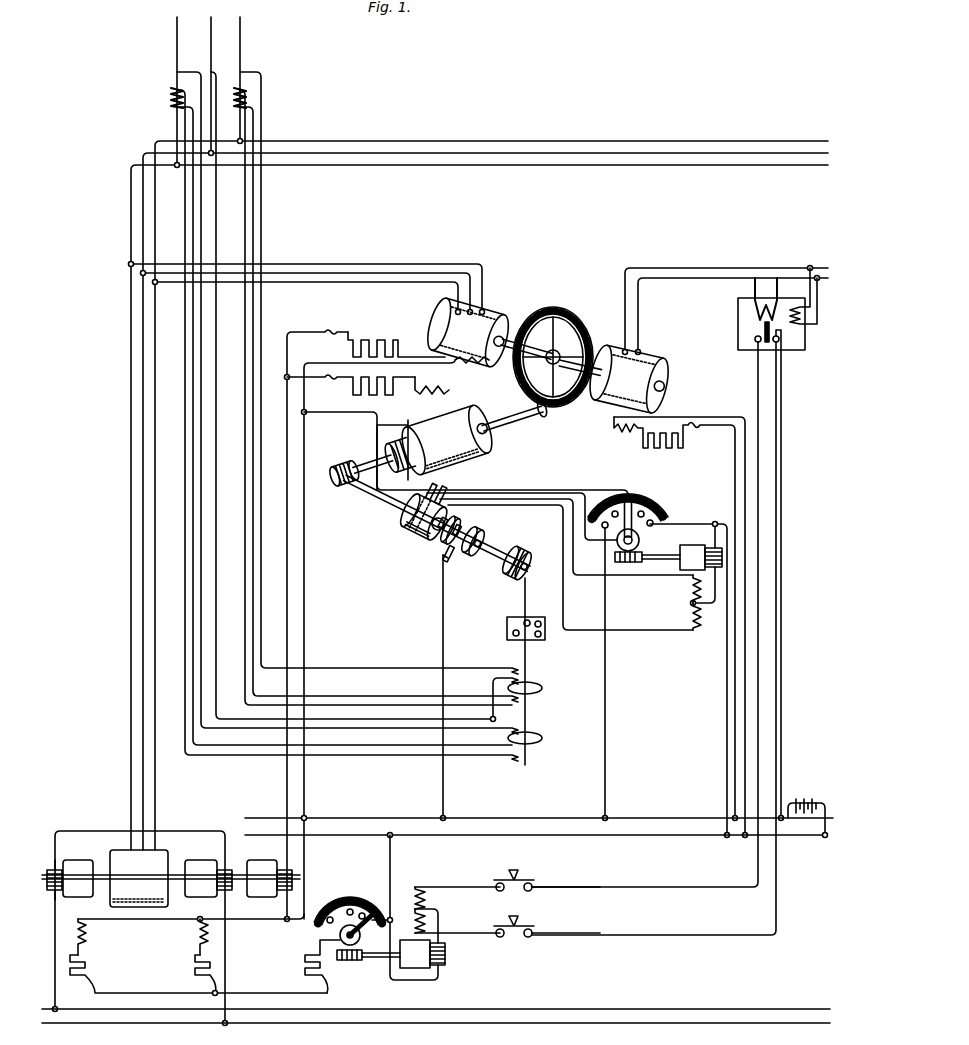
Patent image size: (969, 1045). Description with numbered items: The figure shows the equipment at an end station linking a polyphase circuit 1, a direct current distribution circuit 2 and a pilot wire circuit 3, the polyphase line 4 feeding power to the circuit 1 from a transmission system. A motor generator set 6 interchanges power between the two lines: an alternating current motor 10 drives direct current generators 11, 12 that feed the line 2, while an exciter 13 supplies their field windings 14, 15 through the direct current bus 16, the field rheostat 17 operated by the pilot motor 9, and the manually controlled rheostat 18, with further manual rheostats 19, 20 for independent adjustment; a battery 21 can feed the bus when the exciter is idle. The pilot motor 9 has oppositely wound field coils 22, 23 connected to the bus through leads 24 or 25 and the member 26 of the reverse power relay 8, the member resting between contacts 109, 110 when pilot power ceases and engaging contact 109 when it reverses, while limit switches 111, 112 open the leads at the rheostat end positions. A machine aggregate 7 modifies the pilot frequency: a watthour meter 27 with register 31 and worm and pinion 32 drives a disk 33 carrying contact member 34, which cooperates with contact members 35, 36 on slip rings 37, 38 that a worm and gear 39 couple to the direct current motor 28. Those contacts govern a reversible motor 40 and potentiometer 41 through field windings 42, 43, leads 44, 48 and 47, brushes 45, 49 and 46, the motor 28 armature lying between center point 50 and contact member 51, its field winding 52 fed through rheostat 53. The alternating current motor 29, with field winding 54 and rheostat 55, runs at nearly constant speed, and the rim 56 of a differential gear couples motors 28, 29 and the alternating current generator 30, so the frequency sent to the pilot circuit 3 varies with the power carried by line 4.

The polyphase circuit 1 is at (452, 165).
The direct current distribution circuit 2 is at (446, 1023).
The pilot wire circuit 3 is at (690, 268).
The polyphase line 4 is at (170, 37).
The motor generator set 6 is at (140, 913).
The machine aggregate 7 is at (553, 342).
The reverse power relay 8 is at (738, 310).
The pilot motor 9 is at (391, 907).
The alternating current motor 10 is at (139, 878).
The direct current generator 11 is at (70, 880).
The direct current generator 12 is at (208, 878).
The exciter 13 is at (269, 878).
The field winding 14 is at (86, 936).
The field winding 15 is at (193, 936).
The direct current bus 16 is at (343, 835).
The field rheostat 17 is at (352, 893).
The manually controlled rheostat 18 is at (305, 964).
The manually controlled rheostat 19 is at (88, 960).
The manually controlled rheostat 20 is at (192, 961).
The battery 21 is at (802, 803).
The field coil 22 is at (428, 897).
The field coil 23 is at (432, 920).
The lead 24 is at (614, 887).
The lead 25 is at (620, 935).
The movable member 26 is at (765, 330).
The watthour meter 27 is at (530, 671).
The direct current motor 28 is at (450, 439).
The alternating current motor 29 is at (445, 342).
The alternating current generator 30 is at (620, 416).
The register 31 is at (507, 628).
The worm and pinion 32 is at (515, 582).
The disk 33 is at (476, 560).
The contact member 34 is at (445, 550).
The contact member 35 is at (425, 545).
The contact member 36 is at (455, 533).
The slip ring 37 is at (396, 529).
The slip ring 38 is at (406, 540).
The worm and gear 39 is at (338, 492).
The reversible motor 40 is at (668, 564).
The potentiometer 41 is at (662, 506).
The field winding 42 is at (686, 587).
The field winding 43 is at (688, 622).
The lead 44 is at (632, 578).
The brush 45 is at (412, 503).
The brush 46 is at (450, 563).
The lead 47 is at (443, 641).
The lead 48 is at (632, 630).
The brush 49 is at (432, 511).
The center point 50 is at (632, 498).
The contact member 51 is at (648, 530).
The field winding 52 is at (445, 393).
The adjustable field rheostat 53 is at (353, 392).
The field winding 54 is at (470, 368).
The adjustable rheostat 55 is at (376, 340).
The rim 56 is at (545, 320).
The contact 109 is at (785, 342).
The contact 110 is at (755, 341).
The limit switch 111 is at (520, 880).
The limit switch 112 is at (522, 926).